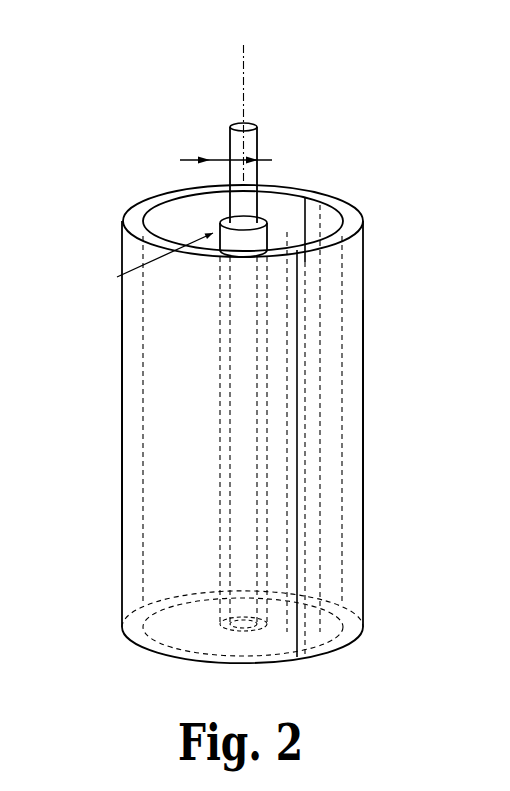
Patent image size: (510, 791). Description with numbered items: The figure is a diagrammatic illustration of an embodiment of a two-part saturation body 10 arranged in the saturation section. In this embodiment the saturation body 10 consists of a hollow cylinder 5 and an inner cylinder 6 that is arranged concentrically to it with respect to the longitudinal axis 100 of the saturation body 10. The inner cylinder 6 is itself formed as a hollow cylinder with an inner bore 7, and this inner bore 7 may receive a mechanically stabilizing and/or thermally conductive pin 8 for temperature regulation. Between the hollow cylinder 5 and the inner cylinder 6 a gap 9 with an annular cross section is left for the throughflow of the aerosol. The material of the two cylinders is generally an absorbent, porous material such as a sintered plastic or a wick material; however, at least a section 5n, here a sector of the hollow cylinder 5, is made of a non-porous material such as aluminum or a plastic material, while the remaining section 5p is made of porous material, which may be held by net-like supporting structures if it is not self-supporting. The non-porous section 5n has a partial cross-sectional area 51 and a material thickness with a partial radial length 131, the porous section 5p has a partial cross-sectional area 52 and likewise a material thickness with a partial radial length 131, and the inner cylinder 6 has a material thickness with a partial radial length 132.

The longitudinal axis 100 is at (243, 62).
The hollow cylinder 5 is at (366, 388).
The porous section 5p is at (135, 222).
The non-porous section 5n is at (362, 222).
The partial cross-sectional area 51 is at (337, 202).
The partial cross-sectional area 52 is at (136, 217).
The inner cylinder 6 is at (219, 227).
The inner bore 7 is at (228, 423).
The pin 8 is at (245, 143).
The gap 9 is at (284, 230).
The saturation body 10 is at (173, 192).
The partial radial length 131 is at (178, 246).
The partial radial length 132 is at (217, 149).